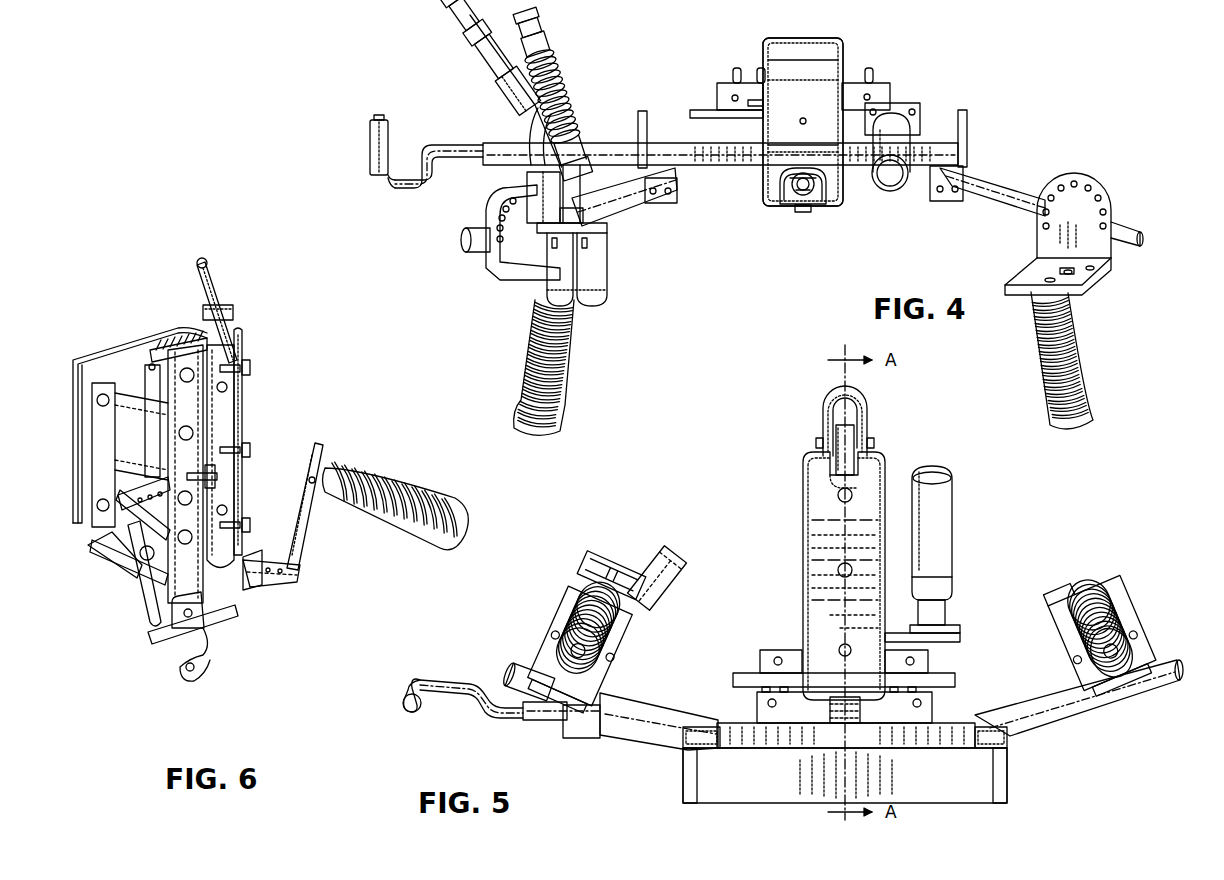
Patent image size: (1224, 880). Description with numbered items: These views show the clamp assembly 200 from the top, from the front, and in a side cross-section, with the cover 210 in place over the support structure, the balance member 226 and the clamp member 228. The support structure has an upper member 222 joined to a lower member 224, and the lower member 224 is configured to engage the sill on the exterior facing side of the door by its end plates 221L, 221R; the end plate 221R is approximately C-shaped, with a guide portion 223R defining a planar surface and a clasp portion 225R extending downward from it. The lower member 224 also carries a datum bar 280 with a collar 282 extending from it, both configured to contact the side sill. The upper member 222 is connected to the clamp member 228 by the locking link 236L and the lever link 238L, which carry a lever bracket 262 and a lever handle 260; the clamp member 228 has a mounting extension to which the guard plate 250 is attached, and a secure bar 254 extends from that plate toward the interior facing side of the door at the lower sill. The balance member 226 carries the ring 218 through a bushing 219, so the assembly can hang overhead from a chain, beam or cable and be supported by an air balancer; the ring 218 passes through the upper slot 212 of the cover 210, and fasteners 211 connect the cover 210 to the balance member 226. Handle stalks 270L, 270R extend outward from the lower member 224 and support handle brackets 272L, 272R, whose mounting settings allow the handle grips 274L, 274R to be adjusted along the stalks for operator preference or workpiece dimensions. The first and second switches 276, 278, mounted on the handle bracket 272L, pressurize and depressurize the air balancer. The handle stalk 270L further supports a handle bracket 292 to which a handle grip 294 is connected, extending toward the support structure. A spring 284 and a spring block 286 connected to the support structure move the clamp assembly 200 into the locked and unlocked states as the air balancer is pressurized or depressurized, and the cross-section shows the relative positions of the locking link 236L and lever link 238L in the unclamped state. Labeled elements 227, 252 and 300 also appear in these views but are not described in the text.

In FIG. 4, the clamp assembly 200 is at (1004, 54).
In FIG. 4, the cover 210 is at (815, 42).
In FIG. 5, the cover 210 is at (883, 460).
In FIG. 6, the cover 210 is at (78, 360).
In FIG. 4, the fasteners 211 is at (806, 207).
In FIG. 5, the fasteners 211 is at (838, 572).
In FIG. 6, the fasteners 211 is at (247, 362).
In FIG. 4, the upper slot 212 is at (824, 200).
In FIG. 5, the upper slot 212 is at (838, 496).
In FIG. 6, the upper slot 212 is at (206, 318).
In FIG. 4, the ring 218 is at (815, 192).
In FIG. 5, the ring 218 is at (866, 396).
In FIG. 6, the ring 218 is at (203, 258).
In FIG. 4, the bushing 219 is at (784, 198).
In FIG. 5, the bushing 219 is at (836, 446).
In FIG. 6, the bushing 219 is at (234, 316).
In FIG. 4, the end plate 221L is at (643, 110).
In FIG. 5, the end plate 221L is at (694, 768).
In FIG. 4, the end plate 221R is at (964, 122).
In FIG. 5, the end plate 221R is at (1005, 770).
In FIG. 6, the end plate 221R is at (215, 655).
In FIG. 6, the upper member 222 is at (138, 582).
In FIG. 6, the guide portion 223R is at (158, 632).
In FIG. 4, the lower member 224 is at (716, 168).
In FIG. 5, the lower member 224 is at (748, 765).
In FIG. 6, the lower member 224 is at (220, 612).
In FIG. 6, the clasp portion 225R is at (180, 687).
In FIG. 4, the balance member 226 is at (800, 212).
In FIG. 6, the balance member 226 is at (207, 462).
In FIG. 6, the plate 227 is at (92, 425).
In FIG. 6, the clamp member 228 is at (100, 460).
In FIG. 6, the locking link 236L is at (145, 378).
In FIG. 6, the lever link 238L is at (92, 546).
In FIG. 4, the guard plate 250 is at (880, 86).
In FIG. 5, the guard plate 250 is at (940, 712).
In FIG. 6, the guard plate 250 is at (128, 602).
In FIG. 4, the mounting plate 252 is at (890, 106).
In FIG. 4, the secure bar 254 is at (700, 112).
In FIG. 5, the secure bar 254 is at (948, 676).
In FIG. 6, the secure bar 254 is at (102, 580).
In FIG. 4, the lever handle 260 is at (895, 178).
In FIG. 5, the lever handle 260 is at (933, 508).
In FIG. 5, the lever bracket 262 is at (958, 628).
In FIG. 4, the handle stalk 270L is at (612, 186).
In FIG. 5, the handle stalk 270L is at (655, 730).
In FIG. 4, the handle stalk 270R is at (996, 186).
In FIG. 5, the handle stalk 270R is at (1035, 715).
In FIG. 6, the handle stalk 270R is at (248, 590).
In FIG. 4, the handle bracket 272L is at (487, 240).
In FIG. 5, the handle bracket 272L is at (578, 602).
In FIG. 4, the handle bracket 272R is at (1100, 200).
In FIG. 5, the handle bracket 272R is at (1142, 700).
In FIG. 6, the handle bracket 272R is at (316, 442).
In FIG. 4, the handle grip 274L is at (570, 410).
In FIG. 5, the handle grip 274L is at (588, 625).
In FIG. 4, the handle grip 274R is at (1045, 415).
In FIG. 5, the handle grip 274R is at (1085, 590).
In FIG. 6, the handle grip 274R is at (410, 470).
In FIG. 4, the first switch 276 is at (540, 275).
In FIG. 4, the second switch 278 is at (598, 306).
In FIG. 4, the datum bar 280 is at (398, 190).
In FIG. 5, the datum bar 280 is at (460, 695).
In FIG. 4, the collar 282 is at (372, 152).
In FIG. 5, the collar 282 is at (410, 710).
In FIG. 6, the spring 284 is at (100, 505).
In FIG. 6, the spring block 286 is at (172, 345).
In FIG. 4, the handle bracket 292 is at (530, 122).
In FIG. 5, the handle bracket 292 is at (583, 740).
In FIG. 4, the handle grip 294 is at (572, 112).
In FIG. 5, the handle grip 294 is at (652, 548).
In FIG. 4, the hose assembly 300 is at (426, 19).